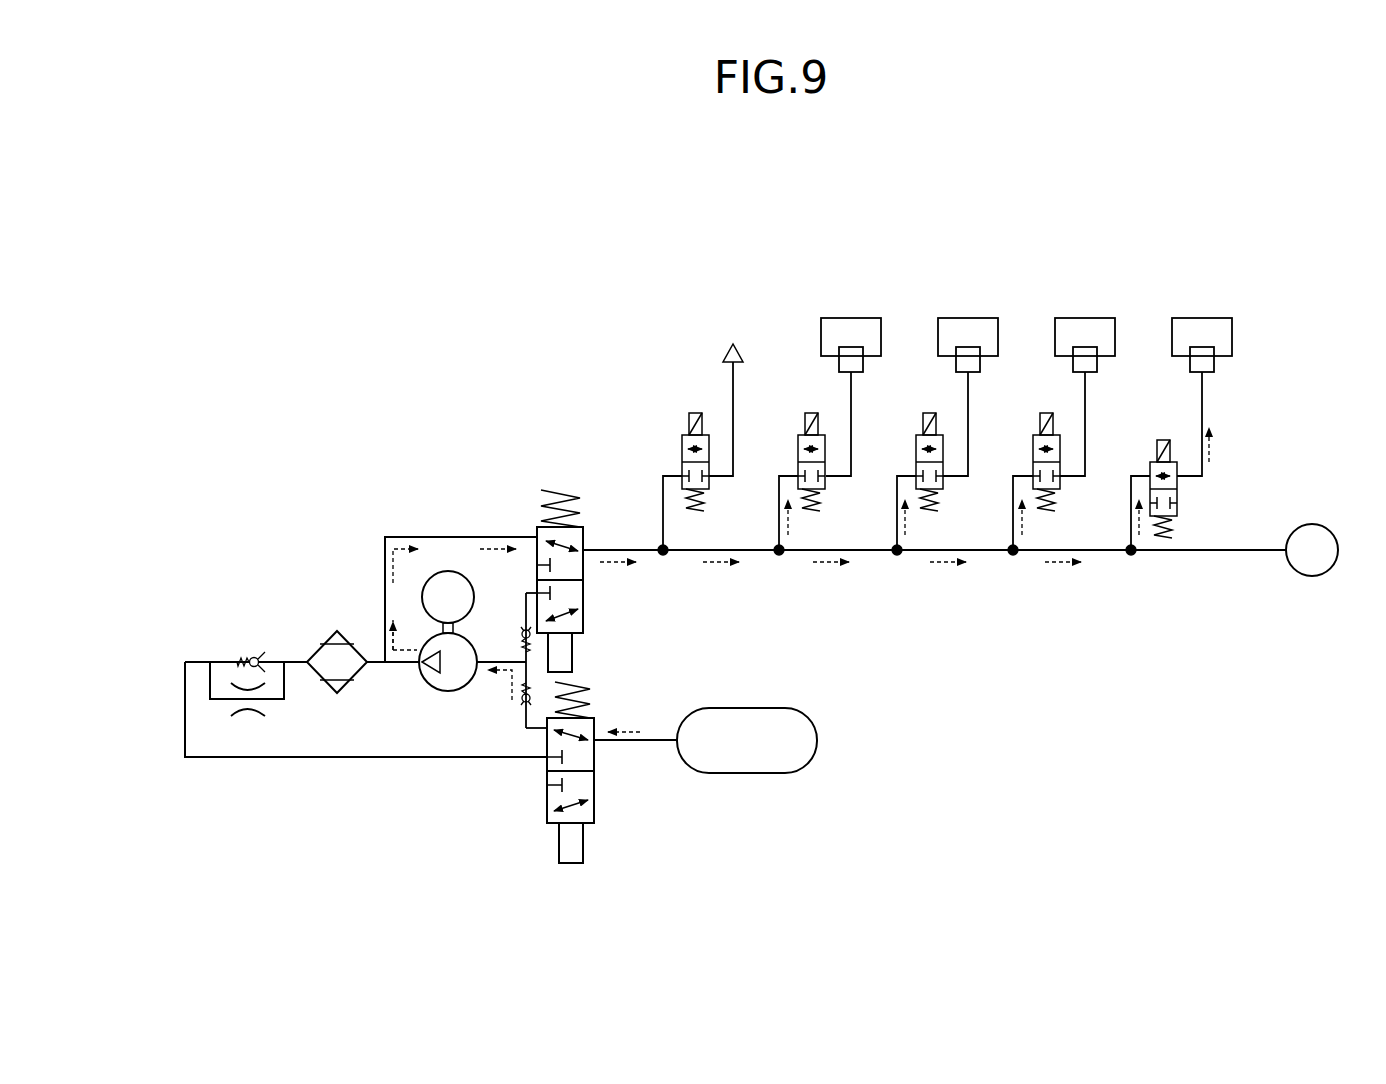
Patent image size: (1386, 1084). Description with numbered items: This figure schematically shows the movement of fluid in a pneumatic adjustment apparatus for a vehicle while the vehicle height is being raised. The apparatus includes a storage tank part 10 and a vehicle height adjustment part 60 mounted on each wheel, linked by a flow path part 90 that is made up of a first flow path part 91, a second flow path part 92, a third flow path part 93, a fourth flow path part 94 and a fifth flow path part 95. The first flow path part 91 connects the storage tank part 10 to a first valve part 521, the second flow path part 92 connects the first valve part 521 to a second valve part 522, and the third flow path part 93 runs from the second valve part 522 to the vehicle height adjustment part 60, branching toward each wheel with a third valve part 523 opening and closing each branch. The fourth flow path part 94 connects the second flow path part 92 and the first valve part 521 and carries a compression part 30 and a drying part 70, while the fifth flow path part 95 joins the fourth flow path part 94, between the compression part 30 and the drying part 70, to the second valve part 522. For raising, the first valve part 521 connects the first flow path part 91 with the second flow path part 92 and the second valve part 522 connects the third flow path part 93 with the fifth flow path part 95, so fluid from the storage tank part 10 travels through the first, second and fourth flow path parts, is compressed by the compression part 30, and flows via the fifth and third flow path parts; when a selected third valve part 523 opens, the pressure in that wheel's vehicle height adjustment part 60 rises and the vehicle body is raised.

The storage tank part 10 is at (812, 760).
The compression part 30 is at (450, 692).
The vehicle height adjustment part 60 is at (1210, 318).
The drying part 70 is at (355, 680).
The flow path part 90 is at (302, 773).
The first flow path part 91 is at (656, 740).
The second flow path part 92 is at (574, 660).
The third flow path part 93 is at (866, 553).
The fourth flow path part 94 is at (185, 697).
The fifth flow path part 95 is at (452, 537).
The first valve part 521 is at (595, 815).
The second valve part 522 is at (584, 598).
The third valve part 523 is at (1178, 508).